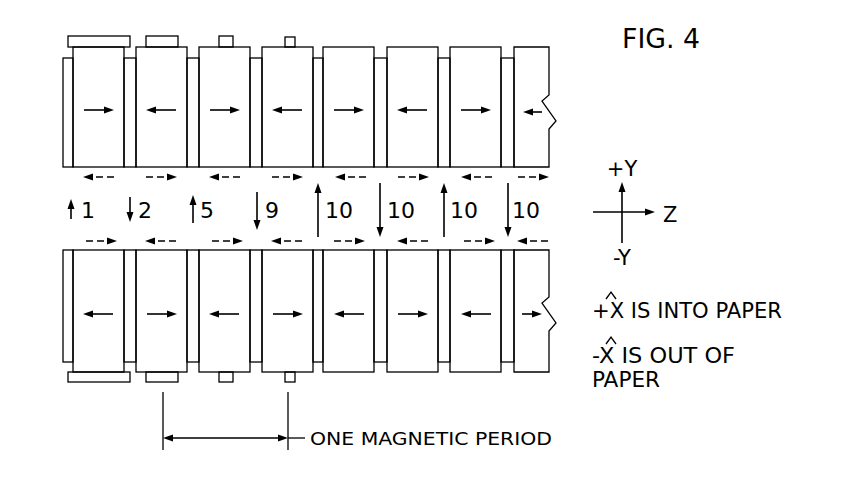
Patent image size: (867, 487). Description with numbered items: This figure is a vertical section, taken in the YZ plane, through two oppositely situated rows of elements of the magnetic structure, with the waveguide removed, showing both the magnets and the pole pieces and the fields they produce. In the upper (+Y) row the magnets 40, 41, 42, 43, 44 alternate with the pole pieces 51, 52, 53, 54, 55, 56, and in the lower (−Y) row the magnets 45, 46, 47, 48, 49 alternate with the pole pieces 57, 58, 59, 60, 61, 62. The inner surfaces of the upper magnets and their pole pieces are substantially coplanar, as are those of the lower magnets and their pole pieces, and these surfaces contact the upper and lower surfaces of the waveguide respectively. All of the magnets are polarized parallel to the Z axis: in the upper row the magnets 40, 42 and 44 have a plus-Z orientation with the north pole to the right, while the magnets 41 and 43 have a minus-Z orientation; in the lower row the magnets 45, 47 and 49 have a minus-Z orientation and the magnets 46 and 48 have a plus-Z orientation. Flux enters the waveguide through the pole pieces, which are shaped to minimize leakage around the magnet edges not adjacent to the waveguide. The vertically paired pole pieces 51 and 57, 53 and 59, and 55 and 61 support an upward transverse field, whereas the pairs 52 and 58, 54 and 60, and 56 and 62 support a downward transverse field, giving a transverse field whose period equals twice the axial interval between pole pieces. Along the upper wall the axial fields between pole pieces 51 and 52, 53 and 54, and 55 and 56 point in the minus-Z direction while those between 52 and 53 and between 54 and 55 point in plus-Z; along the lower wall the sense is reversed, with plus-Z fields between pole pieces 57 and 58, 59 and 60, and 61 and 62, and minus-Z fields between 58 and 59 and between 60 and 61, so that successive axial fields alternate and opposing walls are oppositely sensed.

The magnet 40 is at (84, 86).
The magnet 41 is at (147, 86).
The magnet 42 is at (210, 86).
The magnet 43 is at (273, 86).
The magnet 44 is at (334, 86).
The magnet 45 is at (84, 350).
The magnet 46 is at (147, 350).
The magnet 47 is at (210, 350).
The magnet 48 is at (273, 350).
The magnet 49 is at (334, 350).
The pole piece 51 is at (62, 100).
The pole piece 52 is at (129, 57).
The pole piece 53 is at (192, 57).
The pole piece 54 is at (257, 57).
The pole piece 55 is at (318, 57).
The pole piece 56 is at (381, 57).
The pole piece 57 is at (63, 322).
The pole piece 58 is at (130, 362).
The pole piece 59 is at (193, 362).
The pole piece 60 is at (256, 362).
The pole piece 61 is at (318, 362).
The pole piece 62 is at (381, 362).